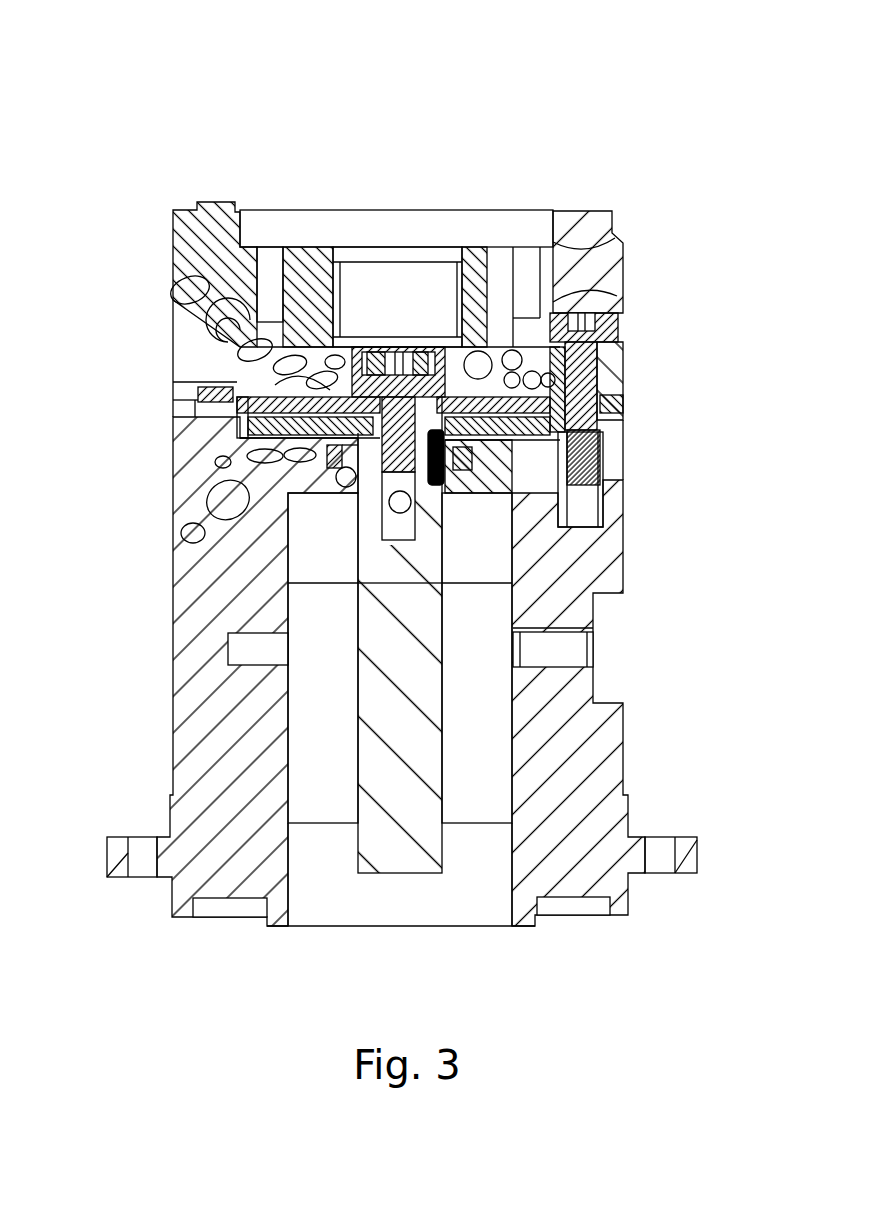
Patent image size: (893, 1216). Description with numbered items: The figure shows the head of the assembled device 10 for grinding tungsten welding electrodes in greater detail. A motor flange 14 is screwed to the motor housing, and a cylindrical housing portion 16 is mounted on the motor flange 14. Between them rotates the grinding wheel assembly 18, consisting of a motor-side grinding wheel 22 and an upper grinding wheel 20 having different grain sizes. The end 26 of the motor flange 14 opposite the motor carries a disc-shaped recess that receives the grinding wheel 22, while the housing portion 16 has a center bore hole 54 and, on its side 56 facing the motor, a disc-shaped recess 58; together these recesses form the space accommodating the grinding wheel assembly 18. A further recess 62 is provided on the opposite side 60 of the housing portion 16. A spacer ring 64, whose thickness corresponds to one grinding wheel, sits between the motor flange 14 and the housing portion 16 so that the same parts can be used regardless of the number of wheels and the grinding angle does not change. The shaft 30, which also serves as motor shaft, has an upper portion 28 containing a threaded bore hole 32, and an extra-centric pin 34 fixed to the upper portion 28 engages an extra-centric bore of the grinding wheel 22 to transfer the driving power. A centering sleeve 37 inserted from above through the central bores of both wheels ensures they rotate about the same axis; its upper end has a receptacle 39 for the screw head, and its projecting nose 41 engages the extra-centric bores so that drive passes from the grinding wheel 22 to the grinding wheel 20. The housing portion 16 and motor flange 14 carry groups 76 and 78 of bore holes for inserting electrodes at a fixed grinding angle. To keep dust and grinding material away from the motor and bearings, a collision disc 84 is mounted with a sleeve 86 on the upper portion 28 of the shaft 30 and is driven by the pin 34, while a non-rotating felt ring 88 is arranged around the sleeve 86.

The device for grinding welding electrodes 10 is at (408, 465).
The motor flange 14 is at (631, 703).
The housing portion 16 is at (211, 546).
The grinding wheel assembly 18 is at (662, 387).
The grinding wheel 20 is at (639, 323).
The grinding wheel 22 is at (639, 297).
The end of the motor flange 26 is at (307, 421).
The upper portion of the shaft 28 is at (255, 465).
The shaft 30 is at (506, 709).
The bore hole 32 is at (238, 589).
The extra-centric pin 34 is at (586, 434).
The centering sleeve 37 is at (205, 328).
The receptacle 39 is at (170, 288).
The projecting nose 41 is at (492, 235).
The center bore hole 54 is at (456, 175).
The side facing the motor 56 is at (149, 370).
The disc-shaped recess 58 is at (640, 243).
The opposite side of the housing portion 60 is at (199, 219).
The recess 62 is at (355, 158).
The spacer ring 64 is at (664, 374).
The group of openings 76 is at (596, 262).
The group of openings 78 is at (211, 529).
The collision disc 84 is at (307, 459).
The sleeve 86 is at (643, 479).
The felt ring 88 is at (578, 451).